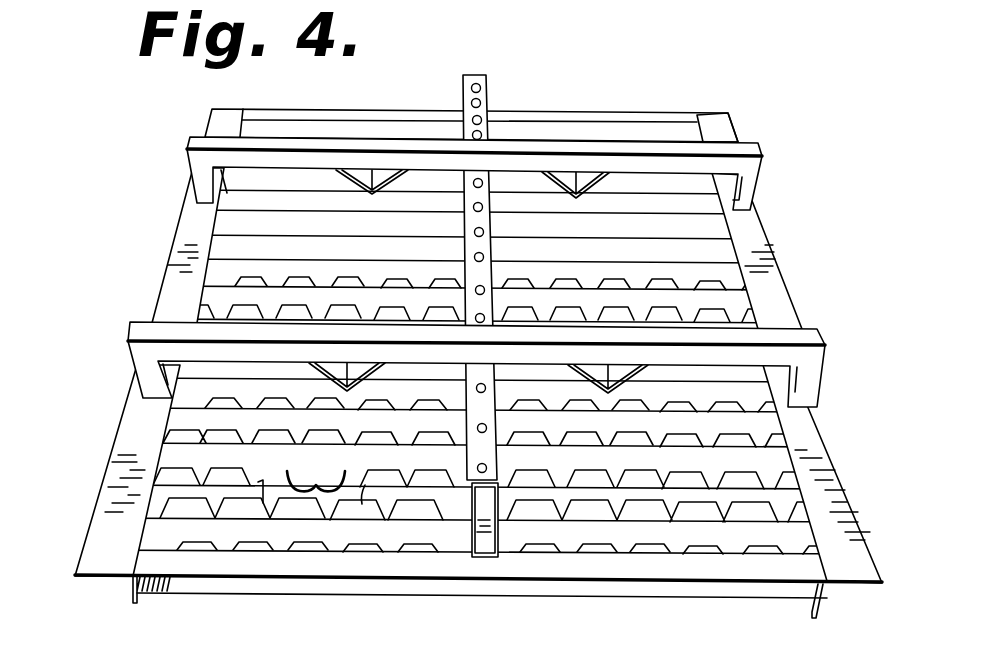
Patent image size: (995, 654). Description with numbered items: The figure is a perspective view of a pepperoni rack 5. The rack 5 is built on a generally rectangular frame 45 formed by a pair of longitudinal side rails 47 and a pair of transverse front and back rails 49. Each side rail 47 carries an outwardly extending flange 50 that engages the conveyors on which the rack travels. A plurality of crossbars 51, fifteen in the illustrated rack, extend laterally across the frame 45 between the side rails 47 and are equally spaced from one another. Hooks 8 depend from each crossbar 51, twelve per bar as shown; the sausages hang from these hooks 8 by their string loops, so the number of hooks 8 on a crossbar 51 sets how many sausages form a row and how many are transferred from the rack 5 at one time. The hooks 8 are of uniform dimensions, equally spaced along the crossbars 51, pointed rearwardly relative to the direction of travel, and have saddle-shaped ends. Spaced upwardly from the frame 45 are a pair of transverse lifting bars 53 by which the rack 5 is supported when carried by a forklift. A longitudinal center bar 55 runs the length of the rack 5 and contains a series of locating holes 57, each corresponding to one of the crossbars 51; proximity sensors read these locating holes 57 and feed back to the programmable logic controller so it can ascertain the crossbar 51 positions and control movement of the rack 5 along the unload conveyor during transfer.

The rack 5 is at (146, 145).
The hook 8 is at (311, 496).
The frame 45 is at (735, 118).
The side rail 47 is at (166, 268).
The front and back rail 49 is at (652, 112).
The flange 50 is at (99, 580).
The crossbar 51 is at (166, 449).
The lifting bar 53 is at (762, 153).
The center bar 55 is at (487, 83).
The locating hole 57 is at (474, 232).